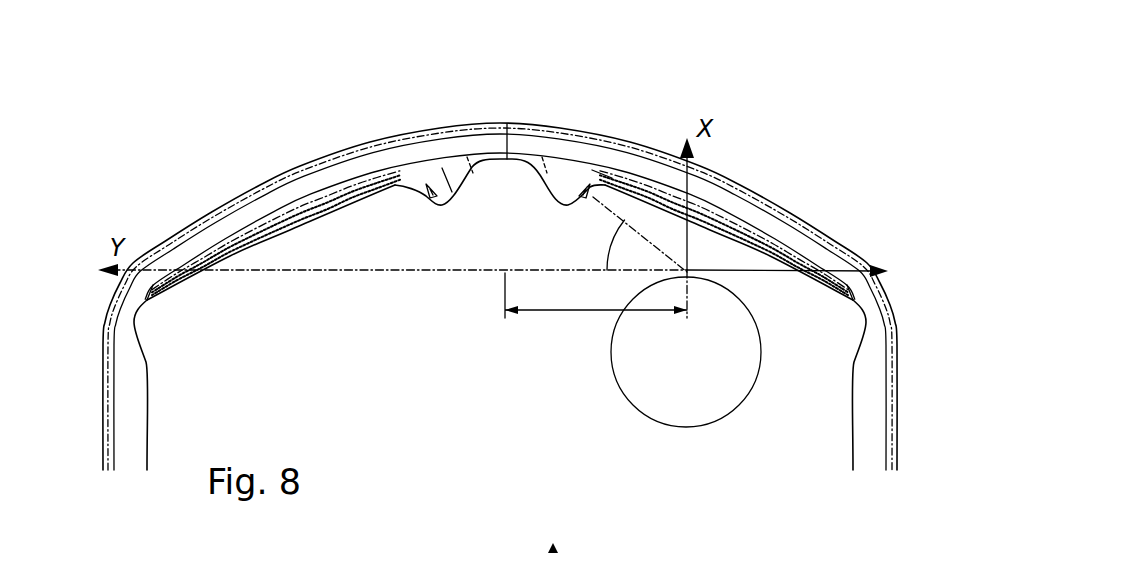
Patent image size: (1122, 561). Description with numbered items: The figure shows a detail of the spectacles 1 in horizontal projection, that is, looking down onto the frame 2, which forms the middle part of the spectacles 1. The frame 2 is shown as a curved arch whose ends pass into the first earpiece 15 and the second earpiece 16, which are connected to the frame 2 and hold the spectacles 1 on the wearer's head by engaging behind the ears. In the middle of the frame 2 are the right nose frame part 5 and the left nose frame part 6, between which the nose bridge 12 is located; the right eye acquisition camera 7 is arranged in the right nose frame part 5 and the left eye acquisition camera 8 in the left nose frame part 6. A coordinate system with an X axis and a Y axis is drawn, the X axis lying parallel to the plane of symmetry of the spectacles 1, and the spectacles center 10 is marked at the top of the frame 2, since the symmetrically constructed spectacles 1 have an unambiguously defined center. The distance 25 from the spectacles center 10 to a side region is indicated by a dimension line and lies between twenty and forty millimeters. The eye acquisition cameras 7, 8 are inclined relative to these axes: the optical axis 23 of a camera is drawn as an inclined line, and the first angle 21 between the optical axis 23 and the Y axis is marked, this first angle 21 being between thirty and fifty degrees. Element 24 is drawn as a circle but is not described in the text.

The spectacles 1 is at (258, 190).
The frame 2 is at (738, 200).
The right nose frame part 5 is at (600, 177).
The left nose frame part 6 is at (445, 172).
The right eye acquisition camera 7 is at (583, 183).
The left eye acquisition camera 8 is at (435, 187).
The spectacles center 10 is at (511, 112).
The nose bridge 12 is at (458, 187).
The first earpiece 15 is at (882, 385).
The second earpiece 16 is at (133, 435).
The first angle 21 is at (604, 245).
The optical axis 23 is at (613, 213).
The circle 24 is at (727, 397).
The distance 25 is at (596, 295).